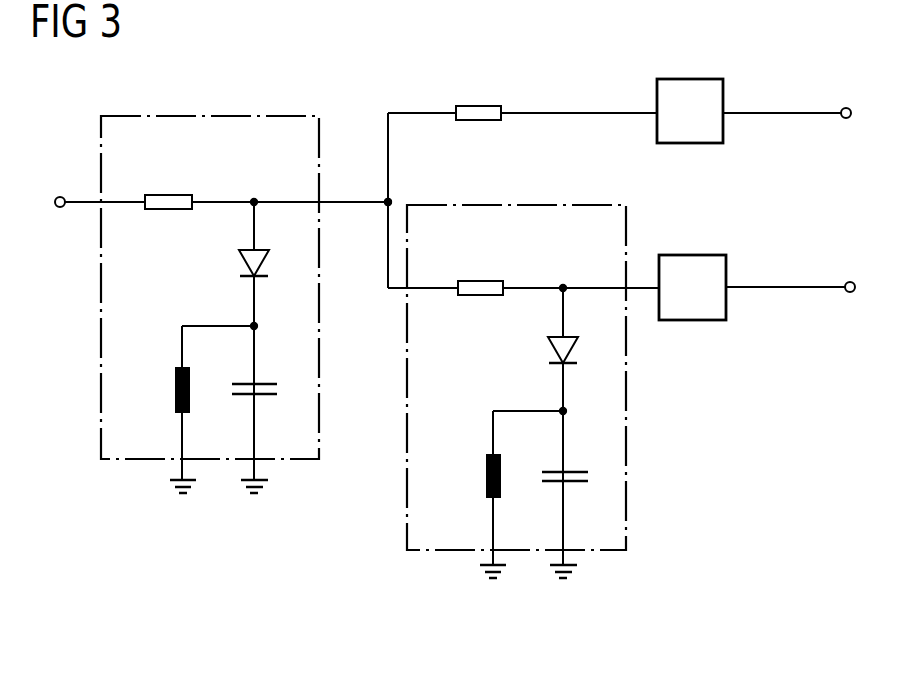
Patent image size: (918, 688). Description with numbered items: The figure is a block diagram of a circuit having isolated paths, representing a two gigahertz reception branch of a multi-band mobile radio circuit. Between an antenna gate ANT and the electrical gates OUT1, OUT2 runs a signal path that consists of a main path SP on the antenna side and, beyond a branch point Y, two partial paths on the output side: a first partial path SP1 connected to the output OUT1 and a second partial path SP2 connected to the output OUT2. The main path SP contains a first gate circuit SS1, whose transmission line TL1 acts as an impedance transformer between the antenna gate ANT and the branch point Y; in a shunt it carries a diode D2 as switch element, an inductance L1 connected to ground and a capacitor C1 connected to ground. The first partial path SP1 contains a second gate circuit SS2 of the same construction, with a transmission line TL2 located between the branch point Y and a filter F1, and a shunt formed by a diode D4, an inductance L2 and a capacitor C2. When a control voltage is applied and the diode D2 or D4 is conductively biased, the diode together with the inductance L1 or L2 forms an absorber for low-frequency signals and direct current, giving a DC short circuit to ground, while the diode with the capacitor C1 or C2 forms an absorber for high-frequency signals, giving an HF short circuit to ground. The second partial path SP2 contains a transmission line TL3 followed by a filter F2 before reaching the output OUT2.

The antenna gate ANT is at (60, 197).
The first gate circuit SS1 is at (232, 113).
The second gate circuit SS2 is at (628, 405).
The transmission line TL1 is at (167, 193).
The transmission line TL2 is at (482, 280).
The transmission line TL3 is at (478, 105).
The diode D2 is at (240, 267).
The diode D4 is at (548, 352).
The inductance L1 is at (176, 390).
The inductance L2 is at (487, 476).
The capacitor C1 is at (264, 383).
The capacitor C2 is at (577, 470).
The main path SP is at (345, 197).
The branch point Y is at (393, 199).
The filter F1 is at (690, 255).
The filter F2 is at (688, 79).
The first partial path SP1 is at (781, 285).
The second partial path SP2 is at (778, 110).
The output OUT1 is at (850, 282).
The output OUT2 is at (846, 107).